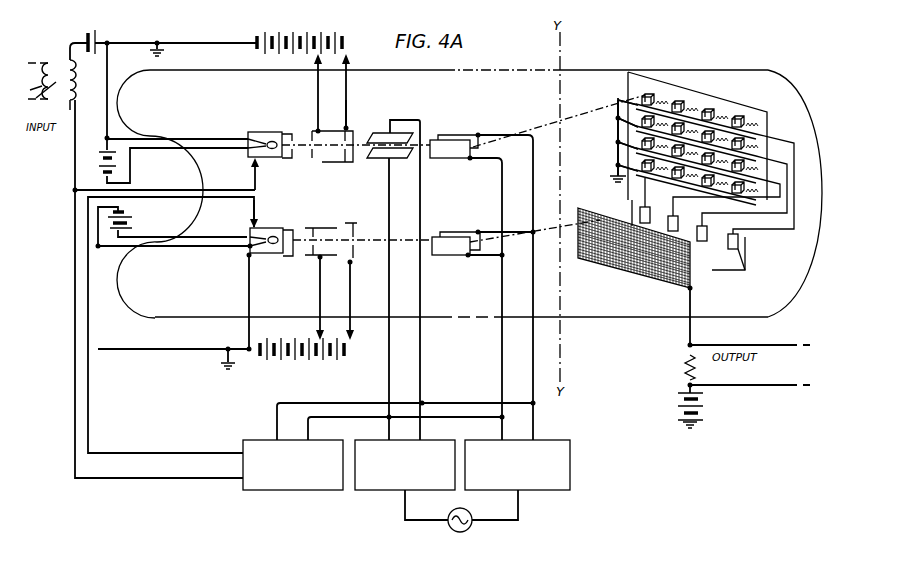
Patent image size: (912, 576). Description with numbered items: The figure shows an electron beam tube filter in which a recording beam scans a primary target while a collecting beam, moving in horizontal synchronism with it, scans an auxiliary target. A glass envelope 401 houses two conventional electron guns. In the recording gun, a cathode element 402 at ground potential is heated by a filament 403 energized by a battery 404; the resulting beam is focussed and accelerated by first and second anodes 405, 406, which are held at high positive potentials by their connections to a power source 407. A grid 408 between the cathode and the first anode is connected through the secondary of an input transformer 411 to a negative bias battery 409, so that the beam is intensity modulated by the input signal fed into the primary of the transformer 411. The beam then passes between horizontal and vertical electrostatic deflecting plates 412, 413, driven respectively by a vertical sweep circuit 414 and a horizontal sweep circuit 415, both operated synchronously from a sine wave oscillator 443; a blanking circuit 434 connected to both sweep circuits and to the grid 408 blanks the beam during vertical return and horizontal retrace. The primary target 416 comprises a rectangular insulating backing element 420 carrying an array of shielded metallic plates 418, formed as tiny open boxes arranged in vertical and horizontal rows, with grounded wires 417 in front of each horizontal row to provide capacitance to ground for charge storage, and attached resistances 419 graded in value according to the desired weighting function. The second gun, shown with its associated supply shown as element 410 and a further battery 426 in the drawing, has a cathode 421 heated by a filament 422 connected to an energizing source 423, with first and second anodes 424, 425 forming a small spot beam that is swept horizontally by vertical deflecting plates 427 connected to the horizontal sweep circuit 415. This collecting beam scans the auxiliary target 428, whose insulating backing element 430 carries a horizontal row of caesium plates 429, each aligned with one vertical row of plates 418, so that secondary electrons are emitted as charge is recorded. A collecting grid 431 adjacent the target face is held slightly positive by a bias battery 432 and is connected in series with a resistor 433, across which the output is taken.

The glass envelope 401 is at (594, 70).
The cathode element 402 is at (274, 158).
The filament 403 is at (279, 141).
The battery 404 is at (97, 166).
The first anode 405 is at (332, 158).
The second anode 406 is at (350, 127).
The power source 407 is at (304, 33).
The grid 408 is at (292, 131).
The negative bias battery 409 is at (92, 33).
The electron gun 410 is at (284, 255).
The input transformer 411 is at (64, 60).
The horizontal electrostatic deflecting plates 412 is at (374, 132).
The vertical electrostatic deflecting plates 413 is at (447, 135).
The vertical sweep circuit 414 is at (392, 490).
The horizontal sweep circuit 415 is at (570, 468).
The primary target 416 is at (672, 80).
The grounded wires 417 is at (618, 152).
The metallic plates 418 is at (637, 102).
The attached resistances 419 is at (716, 118).
The insulating backing element 420 is at (760, 139).
The cathode 421 is at (268, 257).
The filament 422 is at (278, 232).
The energizing source 423 is at (128, 226).
The first anode 424 is at (328, 228).
The second anode 425 is at (366, 213).
The battery 426 is at (314, 358).
The vertical electrostatic deflecting plates 427 is at (455, 236).
The auxiliary target 428 is at (748, 254).
The metallic plates 429 is at (640, 214).
The insulating backing element 430 is at (750, 268).
The collecting grid 431 is at (662, 278).
The bias battery 432 is at (678, 398).
The resistor 433 is at (688, 364).
The blanking circuit 434 is at (276, 490).
The sine wave oscillator 443 is at (471, 527).